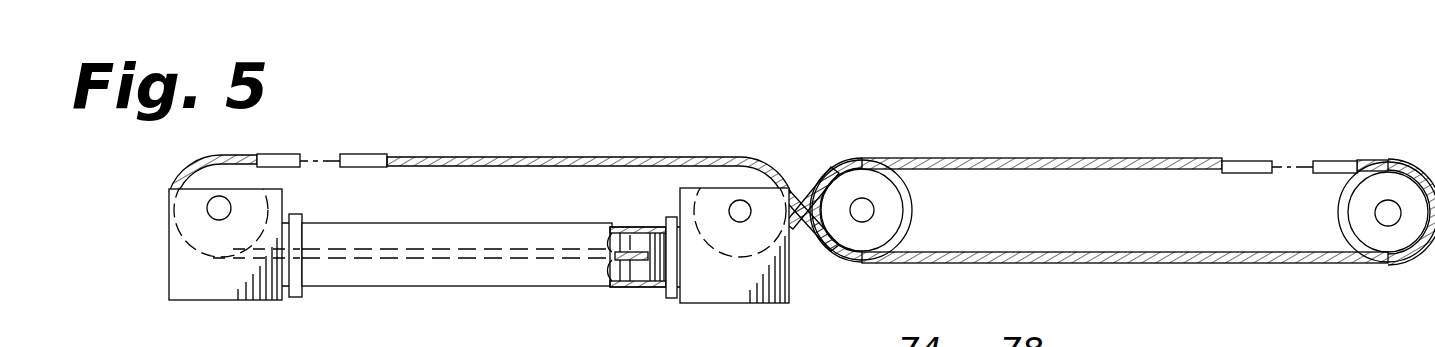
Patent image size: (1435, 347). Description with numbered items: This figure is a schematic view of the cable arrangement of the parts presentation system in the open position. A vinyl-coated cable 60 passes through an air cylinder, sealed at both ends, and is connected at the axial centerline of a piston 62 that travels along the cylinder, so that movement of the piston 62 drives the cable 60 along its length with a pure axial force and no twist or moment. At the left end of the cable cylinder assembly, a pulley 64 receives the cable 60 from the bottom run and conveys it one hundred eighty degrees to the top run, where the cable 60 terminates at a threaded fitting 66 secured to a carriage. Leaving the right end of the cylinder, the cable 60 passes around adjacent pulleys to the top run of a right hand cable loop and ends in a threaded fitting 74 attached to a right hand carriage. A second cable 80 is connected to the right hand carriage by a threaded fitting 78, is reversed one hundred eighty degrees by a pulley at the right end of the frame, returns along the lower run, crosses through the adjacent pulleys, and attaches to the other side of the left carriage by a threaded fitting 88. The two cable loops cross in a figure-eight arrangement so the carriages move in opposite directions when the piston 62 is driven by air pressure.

The vinyl-coated cable 60 is at (626, 288).
The piston 62 is at (637, 288).
The pulley 64 is at (178, 178).
The threaded fitting 66 is at (282, 155).
The threaded fitting 88 is at (370, 155).
The threaded fitting 74 is at (1243, 160).
The threaded fitting 78 is at (1335, 160).
The second cable 80 is at (1018, 266).